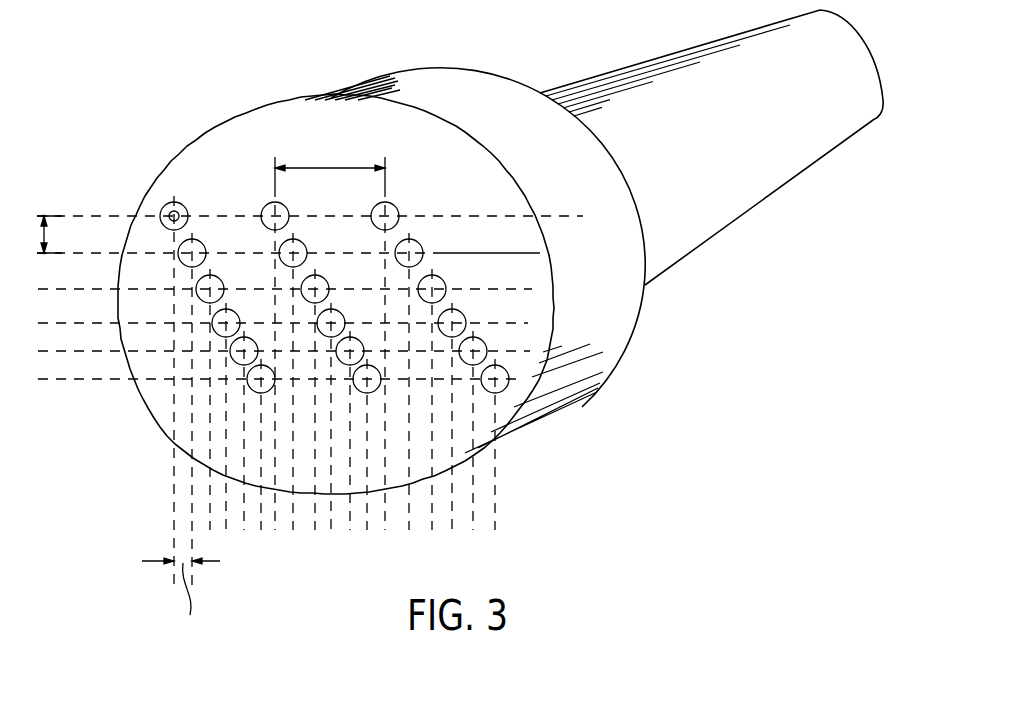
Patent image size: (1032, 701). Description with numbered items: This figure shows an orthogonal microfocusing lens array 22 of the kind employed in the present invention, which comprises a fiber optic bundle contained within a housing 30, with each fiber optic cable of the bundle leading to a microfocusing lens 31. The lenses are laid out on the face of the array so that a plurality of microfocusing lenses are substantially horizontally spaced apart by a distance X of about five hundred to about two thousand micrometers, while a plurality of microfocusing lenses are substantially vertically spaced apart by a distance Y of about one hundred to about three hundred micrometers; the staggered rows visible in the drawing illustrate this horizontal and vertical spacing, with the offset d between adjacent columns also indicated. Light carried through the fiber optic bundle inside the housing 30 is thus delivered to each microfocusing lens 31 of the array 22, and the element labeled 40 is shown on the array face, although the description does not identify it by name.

The microfocusing lens array 22 is at (385, 80).
The housing 30 is at (720, 233).
The microfocusing lens 31 is at (172, 203).
The front face plate 40 is at (507, 405).